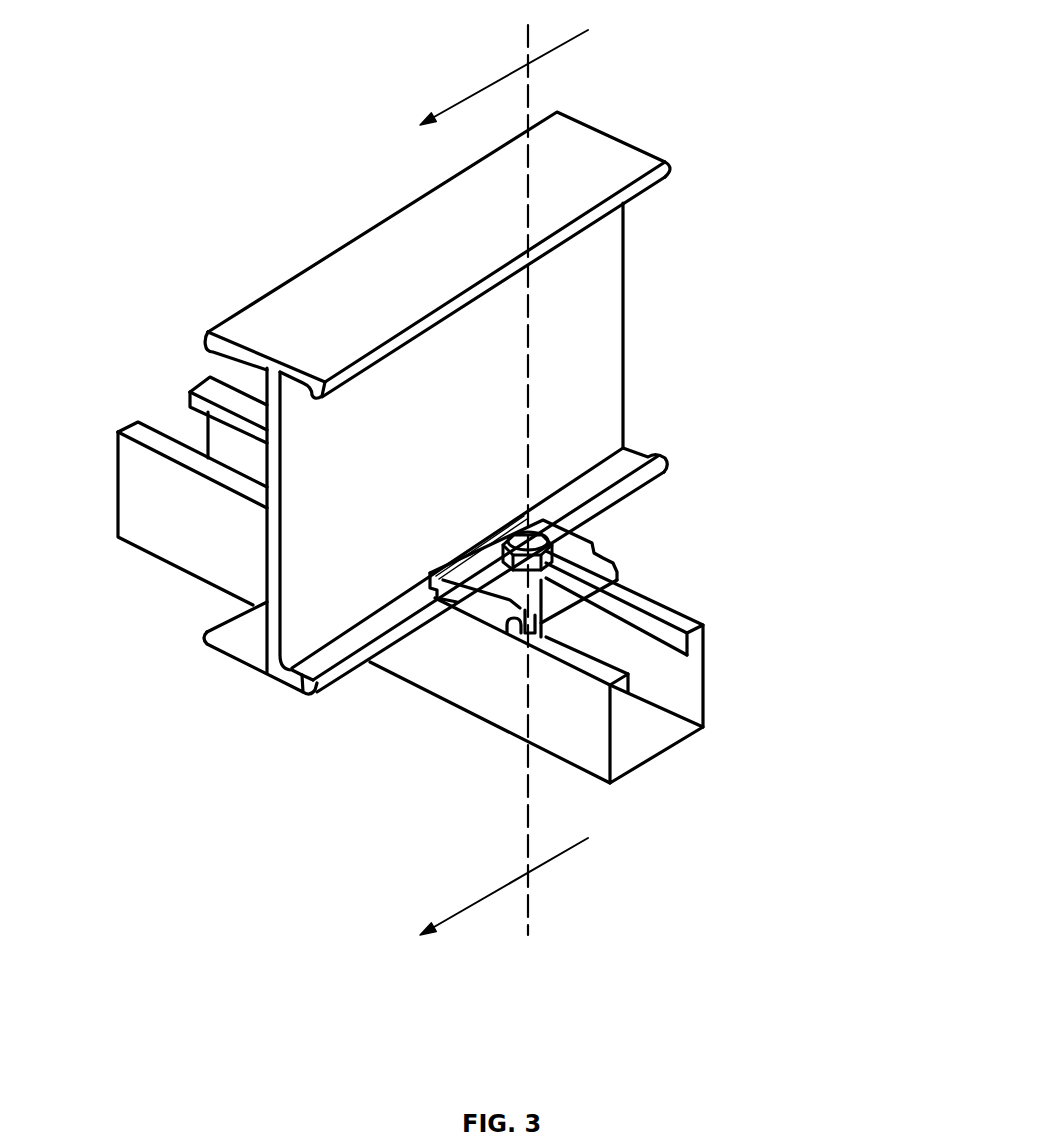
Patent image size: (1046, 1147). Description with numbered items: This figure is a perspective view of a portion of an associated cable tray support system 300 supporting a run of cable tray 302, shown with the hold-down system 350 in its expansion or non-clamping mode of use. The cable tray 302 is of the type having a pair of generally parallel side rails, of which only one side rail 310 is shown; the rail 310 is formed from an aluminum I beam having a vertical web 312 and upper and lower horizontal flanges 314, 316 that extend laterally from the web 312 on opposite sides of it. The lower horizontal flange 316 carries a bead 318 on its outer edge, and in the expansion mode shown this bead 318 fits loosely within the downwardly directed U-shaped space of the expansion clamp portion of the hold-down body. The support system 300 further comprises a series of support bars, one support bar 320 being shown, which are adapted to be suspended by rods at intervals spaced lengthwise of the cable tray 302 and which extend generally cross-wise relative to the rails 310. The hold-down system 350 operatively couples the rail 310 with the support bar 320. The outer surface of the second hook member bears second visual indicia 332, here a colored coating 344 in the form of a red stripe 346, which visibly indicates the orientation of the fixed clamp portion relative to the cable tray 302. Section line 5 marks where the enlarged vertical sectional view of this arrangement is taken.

The section line 5- 5 is at (504, 474).
The support system 300 is at (273, 214).
The cable tray 302 is at (471, 385).
The side rail 310 is at (613, 298).
The vertical web 312 is at (587, 258).
The upper horizontal flange 314 is at (605, 157).
The lower horizontal flange 316 is at (625, 462).
The bead 318 is at (670, 468).
The support bar 320 is at (186, 520).
The second visual indicia 332 is at (615, 578).
The colored coating 344 is at (511, 635).
The red stripe 346 is at (543, 620).
The hold-down system 350 is at (465, 631).